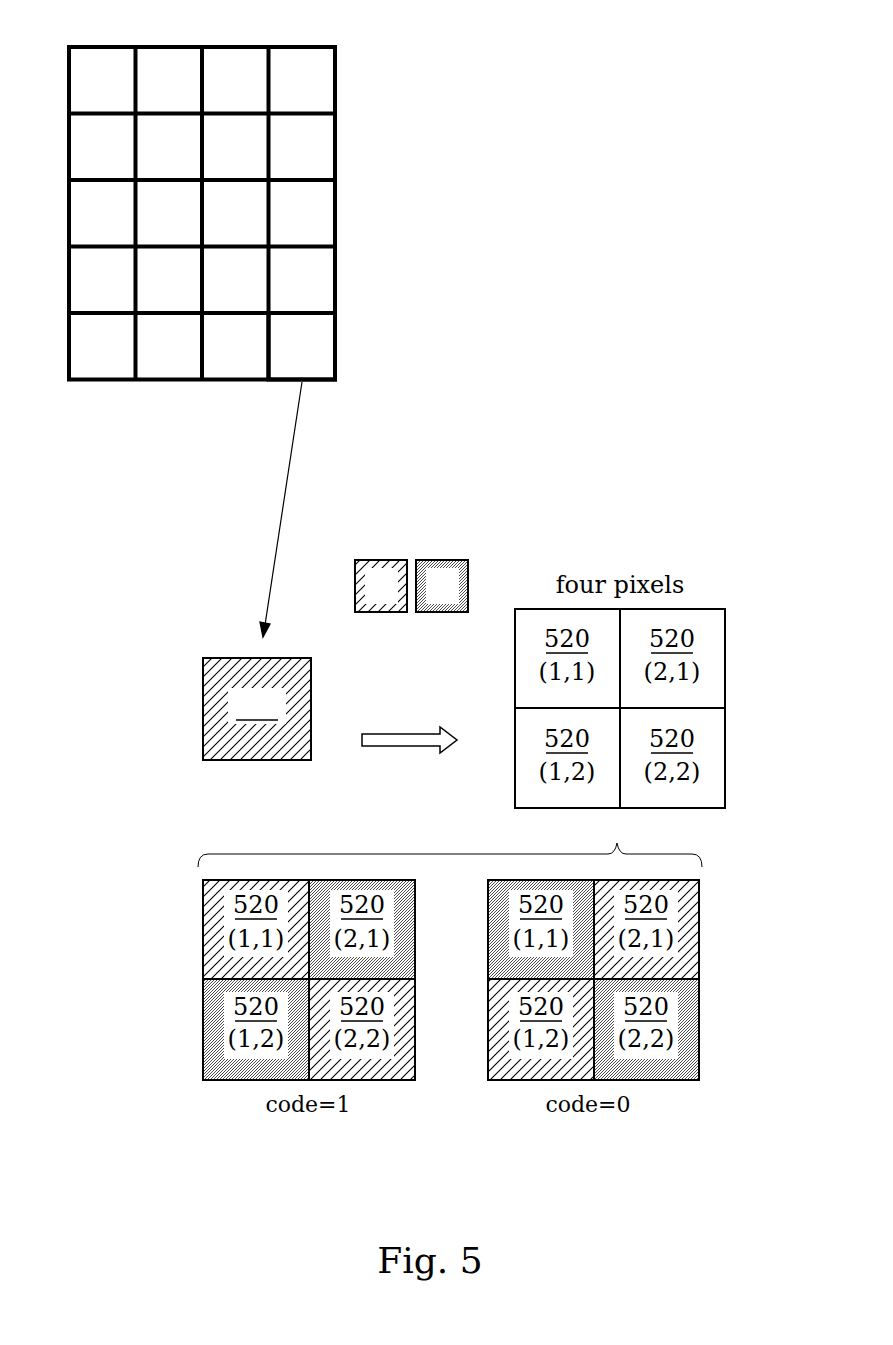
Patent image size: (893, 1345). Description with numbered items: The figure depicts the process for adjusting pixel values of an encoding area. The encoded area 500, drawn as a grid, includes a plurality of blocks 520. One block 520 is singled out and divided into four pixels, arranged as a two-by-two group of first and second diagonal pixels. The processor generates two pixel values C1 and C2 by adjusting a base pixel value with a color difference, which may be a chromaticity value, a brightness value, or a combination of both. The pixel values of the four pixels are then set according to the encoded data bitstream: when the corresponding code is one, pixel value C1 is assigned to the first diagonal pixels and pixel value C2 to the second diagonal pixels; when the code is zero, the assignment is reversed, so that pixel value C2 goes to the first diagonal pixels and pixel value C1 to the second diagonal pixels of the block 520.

The encoded area 500 is at (374, 55).
The block 520 is at (337, 349).
The pixel value C1 is at (381, 586).
The pixel value C2 is at (442, 586).